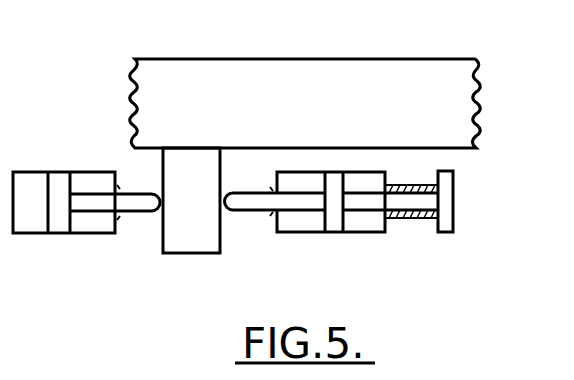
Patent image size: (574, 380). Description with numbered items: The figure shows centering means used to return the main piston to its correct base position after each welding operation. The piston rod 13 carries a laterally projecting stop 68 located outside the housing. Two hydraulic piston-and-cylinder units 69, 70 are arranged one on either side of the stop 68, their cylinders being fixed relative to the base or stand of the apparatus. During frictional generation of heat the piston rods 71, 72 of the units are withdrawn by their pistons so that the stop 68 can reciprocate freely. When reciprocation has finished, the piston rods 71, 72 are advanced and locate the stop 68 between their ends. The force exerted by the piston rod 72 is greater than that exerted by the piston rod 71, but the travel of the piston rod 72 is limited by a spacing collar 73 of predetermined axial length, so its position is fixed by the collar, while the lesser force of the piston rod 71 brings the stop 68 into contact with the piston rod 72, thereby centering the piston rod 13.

The piston rod 13 is at (387, 83).
The stop 68 is at (192, 223).
The hydraulic piston-and-cylinder unit 69 is at (30, 234).
The hydraulic piston-and-cylinder unit 70 is at (367, 232).
The piston rod 71 is at (138, 212).
The piston rod 72 is at (252, 205).
The spacing collar 73 is at (420, 217).